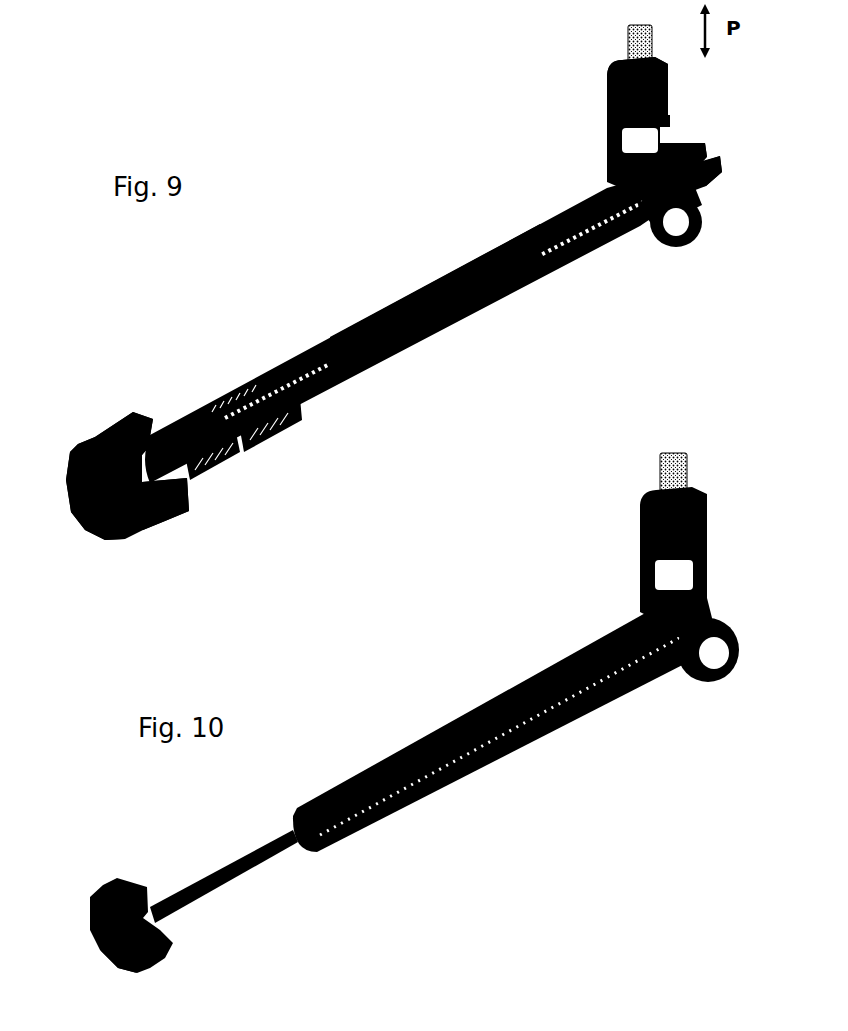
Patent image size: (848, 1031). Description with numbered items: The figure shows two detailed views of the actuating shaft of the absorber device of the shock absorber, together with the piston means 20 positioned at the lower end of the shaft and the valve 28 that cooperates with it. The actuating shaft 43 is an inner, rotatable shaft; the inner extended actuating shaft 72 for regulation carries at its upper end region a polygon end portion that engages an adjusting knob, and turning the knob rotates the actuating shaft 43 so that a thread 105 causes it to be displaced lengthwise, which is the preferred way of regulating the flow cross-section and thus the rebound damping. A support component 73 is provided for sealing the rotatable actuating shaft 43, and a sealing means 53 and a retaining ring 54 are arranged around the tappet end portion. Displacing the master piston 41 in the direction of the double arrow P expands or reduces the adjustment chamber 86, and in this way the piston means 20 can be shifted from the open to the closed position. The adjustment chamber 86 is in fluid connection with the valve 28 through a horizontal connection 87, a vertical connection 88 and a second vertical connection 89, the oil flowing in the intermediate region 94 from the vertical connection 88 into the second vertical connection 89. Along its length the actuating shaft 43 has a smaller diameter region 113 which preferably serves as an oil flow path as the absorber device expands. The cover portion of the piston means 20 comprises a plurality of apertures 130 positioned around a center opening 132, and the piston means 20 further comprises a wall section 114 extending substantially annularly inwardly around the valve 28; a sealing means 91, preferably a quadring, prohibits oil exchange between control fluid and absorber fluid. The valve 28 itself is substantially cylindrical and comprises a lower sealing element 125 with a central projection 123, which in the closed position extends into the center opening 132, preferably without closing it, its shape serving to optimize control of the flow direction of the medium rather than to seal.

In FIG. 9, the piston means 20 is at (160, 542).
In FIG. 10, the valve 28 is at (94, 878).
In FIG. 9, the master piston 41 is at (660, 100).
In FIG. 9, the actuating shaft 43 is at (517, 237).
In FIG. 9, the sealing means 53 is at (612, 108).
In FIG. 9, the retaining ring 54 is at (606, 88).
In FIG. 9, the inner extended actuating shaft 72 is at (718, 168).
In FIG. 9, the support component 73 is at (698, 198).
In FIG. 9, the adjustment chamber 86 is at (662, 118).
In FIG. 9, the horizontal connection 87 is at (675, 148).
In FIG. 9, the vertical connection 88 is at (453, 270).
In FIG. 9, the second vertical connection 89 is at (264, 422).
In FIG. 9, the sealing means 91 is at (92, 436).
In FIG. 9, the intermediate region 94 is at (292, 364).
In FIG. 9, the thread 105 is at (237, 397).
In FIG. 9, the smaller diameter region 113 is at (212, 443).
In FIG. 9, the wall section 114 is at (160, 510).
In FIG. 10, the central projection 123 is at (97, 937).
In FIG. 10, the lower sealing element 125 is at (137, 967).
In FIG. 9, the apertures 130 is at (94, 528).
In FIG. 9, the center opening 132 is at (70, 497).